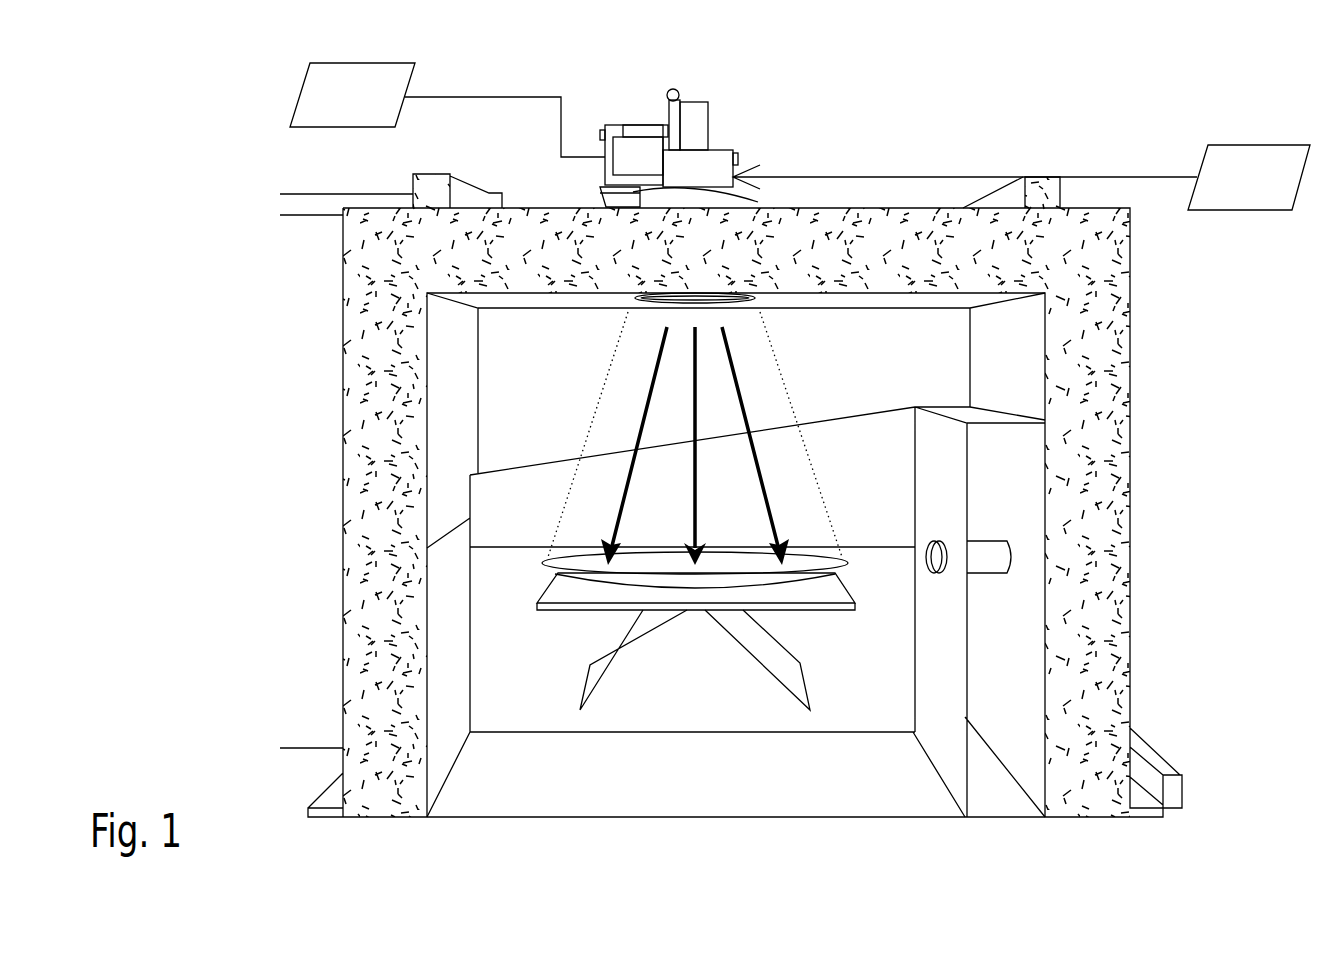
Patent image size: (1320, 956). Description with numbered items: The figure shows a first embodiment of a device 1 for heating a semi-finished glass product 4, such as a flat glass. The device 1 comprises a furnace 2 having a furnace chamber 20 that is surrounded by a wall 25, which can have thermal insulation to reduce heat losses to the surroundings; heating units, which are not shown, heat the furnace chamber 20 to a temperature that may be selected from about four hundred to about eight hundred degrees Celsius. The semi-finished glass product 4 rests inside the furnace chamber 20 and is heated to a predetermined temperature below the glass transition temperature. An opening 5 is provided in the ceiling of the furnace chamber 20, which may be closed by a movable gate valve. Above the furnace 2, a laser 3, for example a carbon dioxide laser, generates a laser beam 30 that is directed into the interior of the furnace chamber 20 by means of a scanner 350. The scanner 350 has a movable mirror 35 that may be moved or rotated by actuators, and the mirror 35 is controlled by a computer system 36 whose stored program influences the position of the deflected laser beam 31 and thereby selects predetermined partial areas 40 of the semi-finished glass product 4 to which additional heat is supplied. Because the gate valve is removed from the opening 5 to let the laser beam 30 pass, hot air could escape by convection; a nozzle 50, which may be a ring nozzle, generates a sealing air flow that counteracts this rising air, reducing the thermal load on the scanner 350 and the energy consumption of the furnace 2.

The device 1 is at (1172, 110).
The furnace 2 is at (1130, 292).
The laser 3 is at (1241, 191).
The semi-finished glass product 4 is at (560, 612).
The opening 5 is at (652, 313).
The furnace chamber 20 is at (884, 360).
The wall 25 is at (1117, 375).
The laser beam 30 is at (923, 175).
The deflected laser beam 31 is at (765, 482).
The movable mirror 35 is at (708, 132).
The computer system 36 is at (343, 111).
The partial areas 40 is at (793, 563).
The nozzle 50 is at (750, 197).
The scanner 350 is at (706, 71).